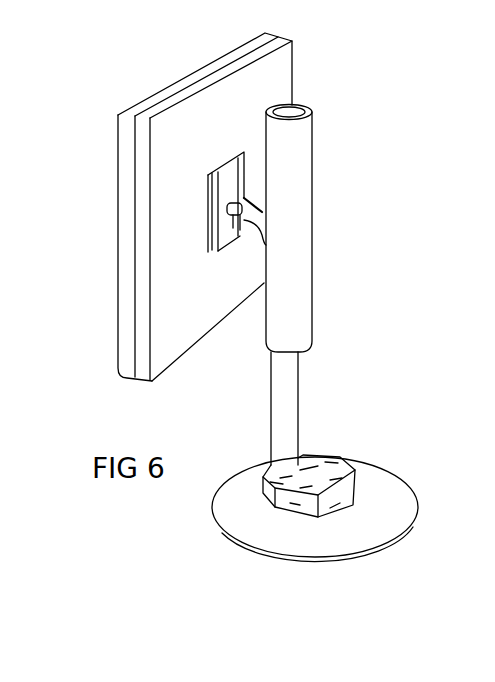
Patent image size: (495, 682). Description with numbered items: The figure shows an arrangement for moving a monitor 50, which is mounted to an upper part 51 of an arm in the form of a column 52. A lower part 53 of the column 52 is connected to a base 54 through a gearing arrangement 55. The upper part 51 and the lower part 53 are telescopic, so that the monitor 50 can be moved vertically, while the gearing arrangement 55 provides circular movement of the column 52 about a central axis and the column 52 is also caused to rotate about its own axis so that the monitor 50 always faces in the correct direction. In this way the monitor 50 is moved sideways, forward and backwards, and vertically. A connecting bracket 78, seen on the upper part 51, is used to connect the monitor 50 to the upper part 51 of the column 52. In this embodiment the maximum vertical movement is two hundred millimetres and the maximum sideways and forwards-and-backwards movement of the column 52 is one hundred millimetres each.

The monitor 50 is at (123, 253).
The upper part 51 is at (300, 176).
The column 52 is at (326, 355).
The lower part 53 is at (300, 383).
The base 54 is at (363, 537).
The gearing arrangement 55 is at (343, 453).
The connecting bracket 78 is at (266, 245).